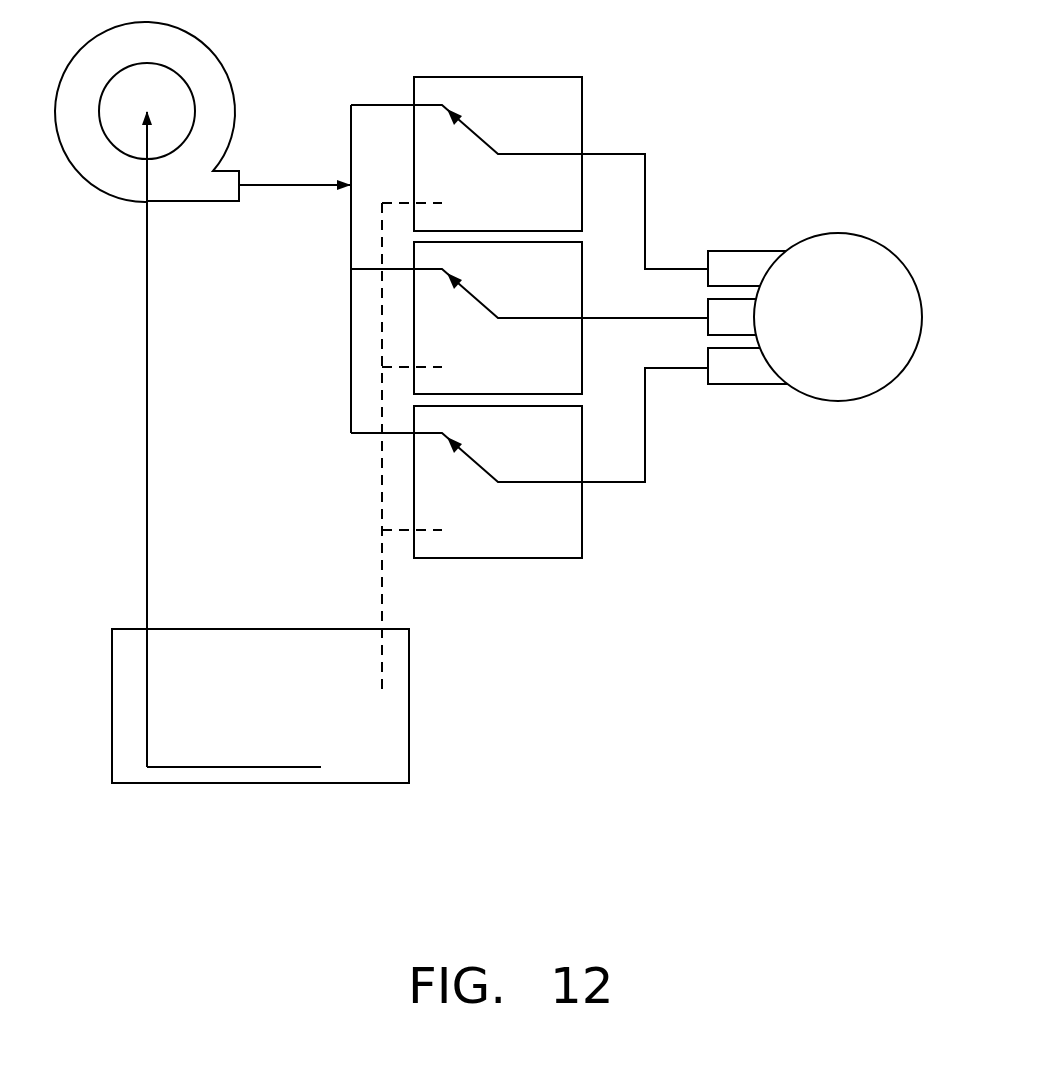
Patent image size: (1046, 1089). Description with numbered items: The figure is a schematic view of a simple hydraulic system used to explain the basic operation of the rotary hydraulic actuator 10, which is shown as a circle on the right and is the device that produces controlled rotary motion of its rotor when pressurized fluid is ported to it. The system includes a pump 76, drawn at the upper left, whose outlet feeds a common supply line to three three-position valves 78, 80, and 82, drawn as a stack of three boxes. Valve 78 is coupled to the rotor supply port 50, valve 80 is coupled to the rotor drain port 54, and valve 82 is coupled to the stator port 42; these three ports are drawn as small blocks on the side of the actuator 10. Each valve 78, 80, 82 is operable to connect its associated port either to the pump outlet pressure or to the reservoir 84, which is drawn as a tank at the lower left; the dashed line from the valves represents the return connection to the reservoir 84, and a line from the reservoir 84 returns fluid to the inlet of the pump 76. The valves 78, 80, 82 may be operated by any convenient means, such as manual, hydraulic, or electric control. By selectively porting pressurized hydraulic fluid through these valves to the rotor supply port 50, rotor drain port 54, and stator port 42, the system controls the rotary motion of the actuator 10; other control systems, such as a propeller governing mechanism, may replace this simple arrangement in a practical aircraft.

The rotary hydraulic actuator 10 is at (856, 331).
The stator port 42 is at (722, 320).
The rotor supply port 50 is at (732, 262).
The rotor drain port 54 is at (732, 373).
The pump 76 is at (188, 53).
The three-position valve 78 is at (568, 95).
The three-position valve 80 is at (560, 523).
The three-position valve 82 is at (558, 355).
The reservoir 84 is at (378, 723).